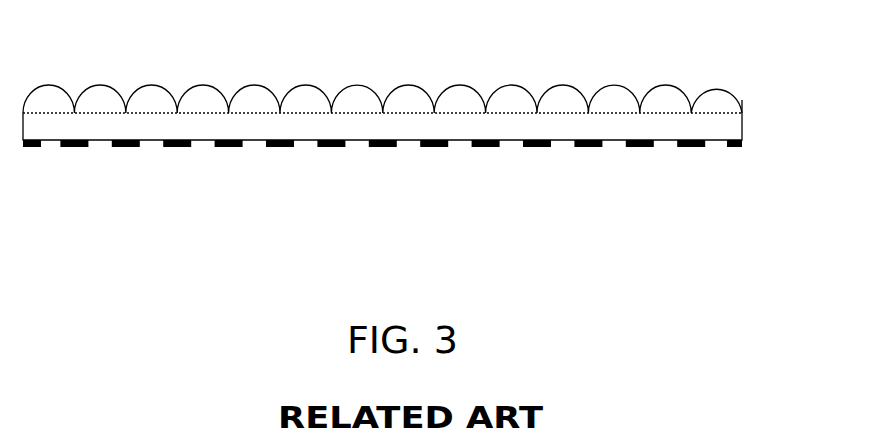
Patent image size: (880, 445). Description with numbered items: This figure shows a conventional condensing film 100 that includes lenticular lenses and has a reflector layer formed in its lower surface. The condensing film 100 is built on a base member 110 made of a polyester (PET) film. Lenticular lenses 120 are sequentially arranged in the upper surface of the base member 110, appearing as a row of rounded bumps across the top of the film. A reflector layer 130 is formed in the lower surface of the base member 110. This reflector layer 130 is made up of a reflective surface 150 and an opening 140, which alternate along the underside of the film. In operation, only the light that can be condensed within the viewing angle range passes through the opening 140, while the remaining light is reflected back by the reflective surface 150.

The condensing film 100 is at (447, 44).
The base member 110 is at (742, 126).
The lenticular lenses 120 is at (742, 98).
The reflector layer 130 is at (717, 228).
The opening 140 is at (662, 147).
The reflective surface 150 is at (693, 147).